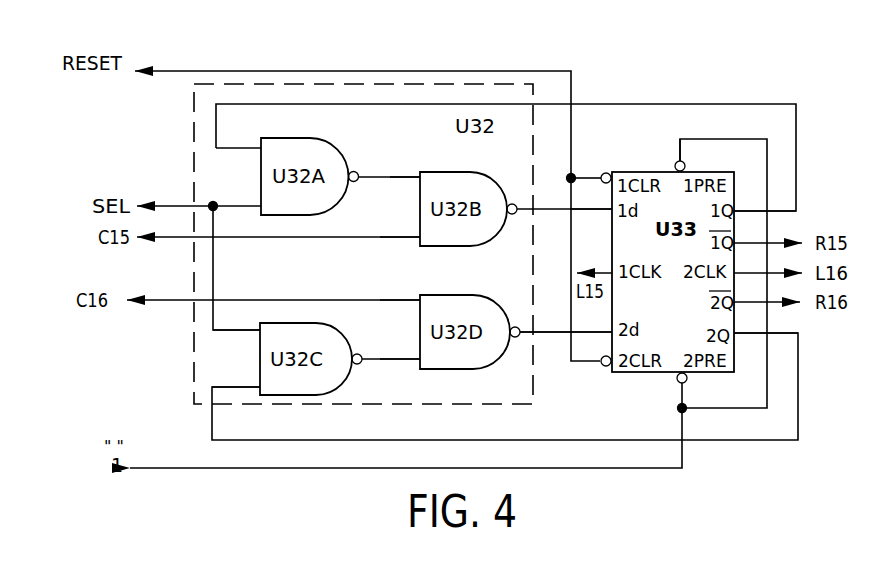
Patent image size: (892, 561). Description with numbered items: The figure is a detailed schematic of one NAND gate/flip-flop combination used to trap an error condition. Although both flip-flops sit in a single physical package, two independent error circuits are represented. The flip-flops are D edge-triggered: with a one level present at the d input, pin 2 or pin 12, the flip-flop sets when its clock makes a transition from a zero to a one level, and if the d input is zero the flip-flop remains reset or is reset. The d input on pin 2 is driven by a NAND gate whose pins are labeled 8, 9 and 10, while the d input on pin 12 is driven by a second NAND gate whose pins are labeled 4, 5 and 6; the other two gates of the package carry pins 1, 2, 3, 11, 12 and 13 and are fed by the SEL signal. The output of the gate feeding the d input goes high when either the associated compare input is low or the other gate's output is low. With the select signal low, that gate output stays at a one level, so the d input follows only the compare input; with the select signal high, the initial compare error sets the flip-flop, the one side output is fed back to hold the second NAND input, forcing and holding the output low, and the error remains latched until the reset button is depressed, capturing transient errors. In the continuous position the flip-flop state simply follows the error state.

The pin 1 (U32C input / U33 1CLR) 1 is at (411, 270).
The d input 2 is at (412, 260).
The pin 3 (U32C output / U33 1CLK) 3 is at (482, 308).
The pin 4 (U32D input / U33 1PRE) 4 is at (542, 249).
The pin 5 (U32D input / U33 1Q) 5 is at (588, 244).
The pin 6 (U32D output / U33 1Q-bar) 6 is at (656, 278).
The pin 8 (U32B output / U33 2Q-bar) 8 is at (653, 242).
The pin 9 (U32B input / U33 2Q) 9 is at (589, 274).
The pin 10 (U32B input / U33 2PRE) 10 is at (538, 281).
The pin 11 (U32A output / U33 2CLK) 11 is at (576, 214).
The d input 12 is at (414, 230).
The pin 13 (U32A input / U33 2CLR) 13 is at (413, 275).